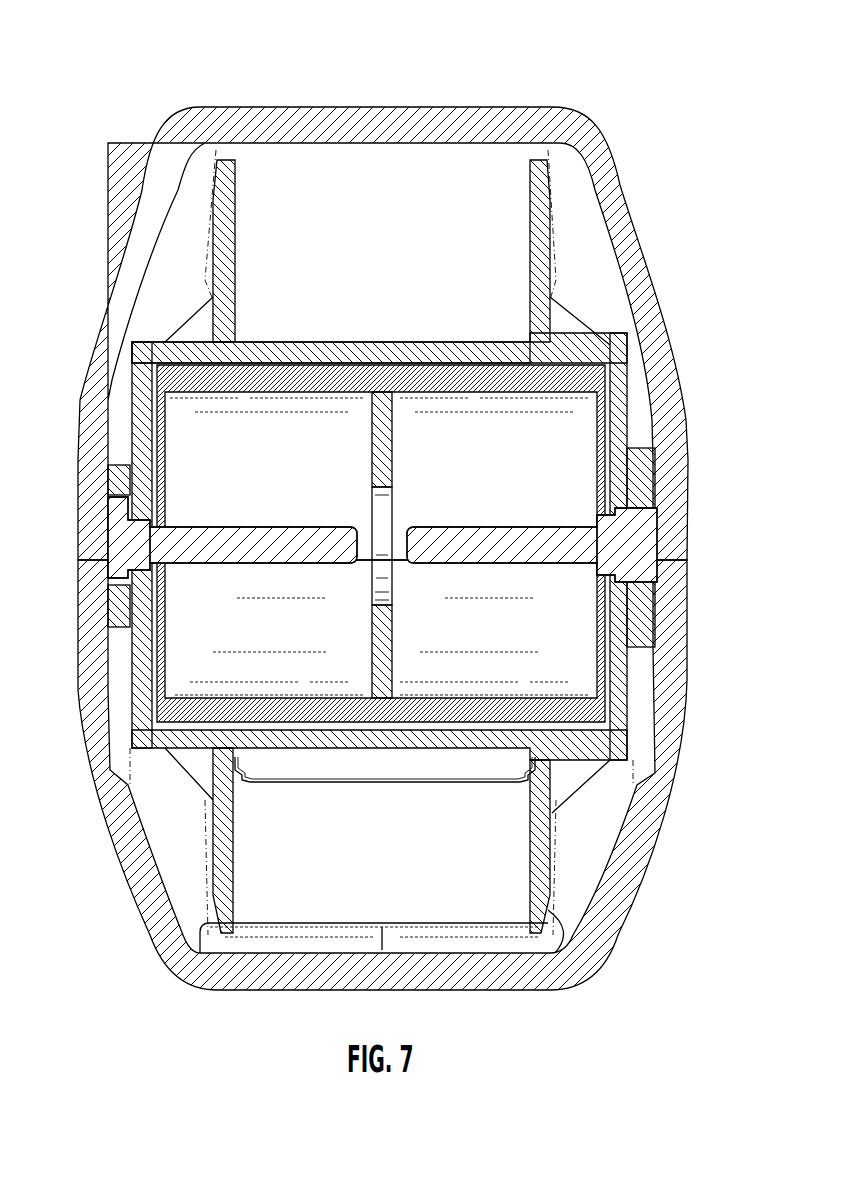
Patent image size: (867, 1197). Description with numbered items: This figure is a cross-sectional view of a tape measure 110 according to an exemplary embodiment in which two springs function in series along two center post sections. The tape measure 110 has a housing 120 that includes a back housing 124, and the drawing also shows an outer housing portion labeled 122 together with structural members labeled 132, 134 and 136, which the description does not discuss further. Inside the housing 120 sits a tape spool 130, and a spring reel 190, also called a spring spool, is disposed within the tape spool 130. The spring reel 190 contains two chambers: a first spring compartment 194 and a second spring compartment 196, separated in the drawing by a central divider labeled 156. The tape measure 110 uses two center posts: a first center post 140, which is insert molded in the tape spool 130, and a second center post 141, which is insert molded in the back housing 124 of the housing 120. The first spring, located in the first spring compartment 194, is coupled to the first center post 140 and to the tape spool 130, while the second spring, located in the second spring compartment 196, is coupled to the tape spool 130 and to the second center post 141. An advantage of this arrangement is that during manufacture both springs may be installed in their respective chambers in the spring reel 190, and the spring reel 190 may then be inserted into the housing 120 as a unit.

The tape measure 110 is at (154, 84).
The housing 120 is at (430, 548).
The upper housing portion 122 is at (154, 176).
The back housing 124 is at (658, 624).
The tape spool 130 is at (568, 350).
The plate 132 is at (370, 343).
The left post 134 is at (236, 245).
The right post 136 is at (530, 245).
The first center post 140 is at (118, 555).
The second center post 141 is at (640, 548).
The divider 156 is at (372, 435).
The spring reel 190 is at (507, 386).
The first spring compartment 194 is at (230, 470).
The second spring compartment 196 is at (522, 486).